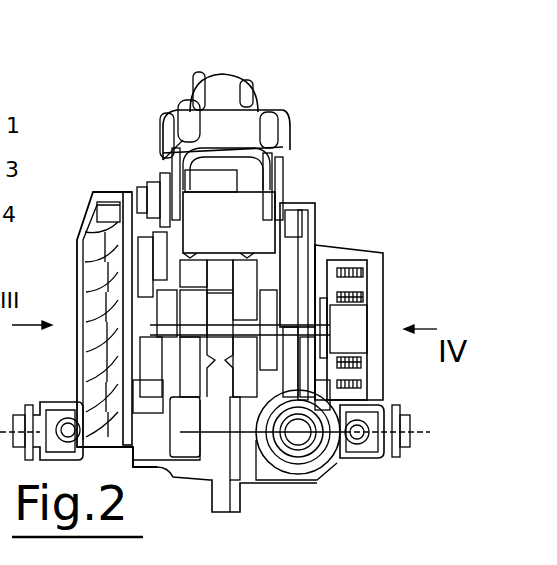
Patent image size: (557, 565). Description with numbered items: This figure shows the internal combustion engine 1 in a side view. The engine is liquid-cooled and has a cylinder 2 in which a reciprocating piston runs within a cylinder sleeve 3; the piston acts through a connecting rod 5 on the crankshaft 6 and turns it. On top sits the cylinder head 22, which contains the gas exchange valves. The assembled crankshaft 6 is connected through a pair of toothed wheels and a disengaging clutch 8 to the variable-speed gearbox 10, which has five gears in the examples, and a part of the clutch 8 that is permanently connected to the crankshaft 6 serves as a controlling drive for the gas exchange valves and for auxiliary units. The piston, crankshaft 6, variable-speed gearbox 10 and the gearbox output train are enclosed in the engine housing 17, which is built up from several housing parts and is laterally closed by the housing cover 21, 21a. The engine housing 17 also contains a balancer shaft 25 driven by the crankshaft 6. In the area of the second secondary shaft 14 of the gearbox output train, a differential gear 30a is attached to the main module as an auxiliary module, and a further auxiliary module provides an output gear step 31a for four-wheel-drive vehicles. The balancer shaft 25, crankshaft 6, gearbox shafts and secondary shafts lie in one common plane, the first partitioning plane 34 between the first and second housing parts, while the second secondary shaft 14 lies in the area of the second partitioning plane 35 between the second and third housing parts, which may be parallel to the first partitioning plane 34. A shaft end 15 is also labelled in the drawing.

The internal combustion engine 1 is at (308, 190).
The cylinder 2 is at (283, 148).
The cylinder sleeve 3 is at (161, 315).
The connecting rod 5 is at (22, 415).
The crankshaft 6 is at (360, 348).
The disengaging clutch 8 is at (350, 282).
The variable-speed gearbox 10 is at (0, 91).
The second secondary shaft 14 is at (157, 468).
The output shaft end 15 is at (403, 440).
The engine housing 17 is at (328, 234).
The housing cover 21 is at (383, 270).
The housing cover 21a is at (90, 215).
The cylinder head 22 is at (217, 85).
The balancer shaft 25 is at (183, 323).
The differential gear 30a is at (245, 450).
The output gear step 31a is at (313, 450).
The first partitioning plane 34 is at (402, 326).
The second partitioning plane 35 is at (424, 431).